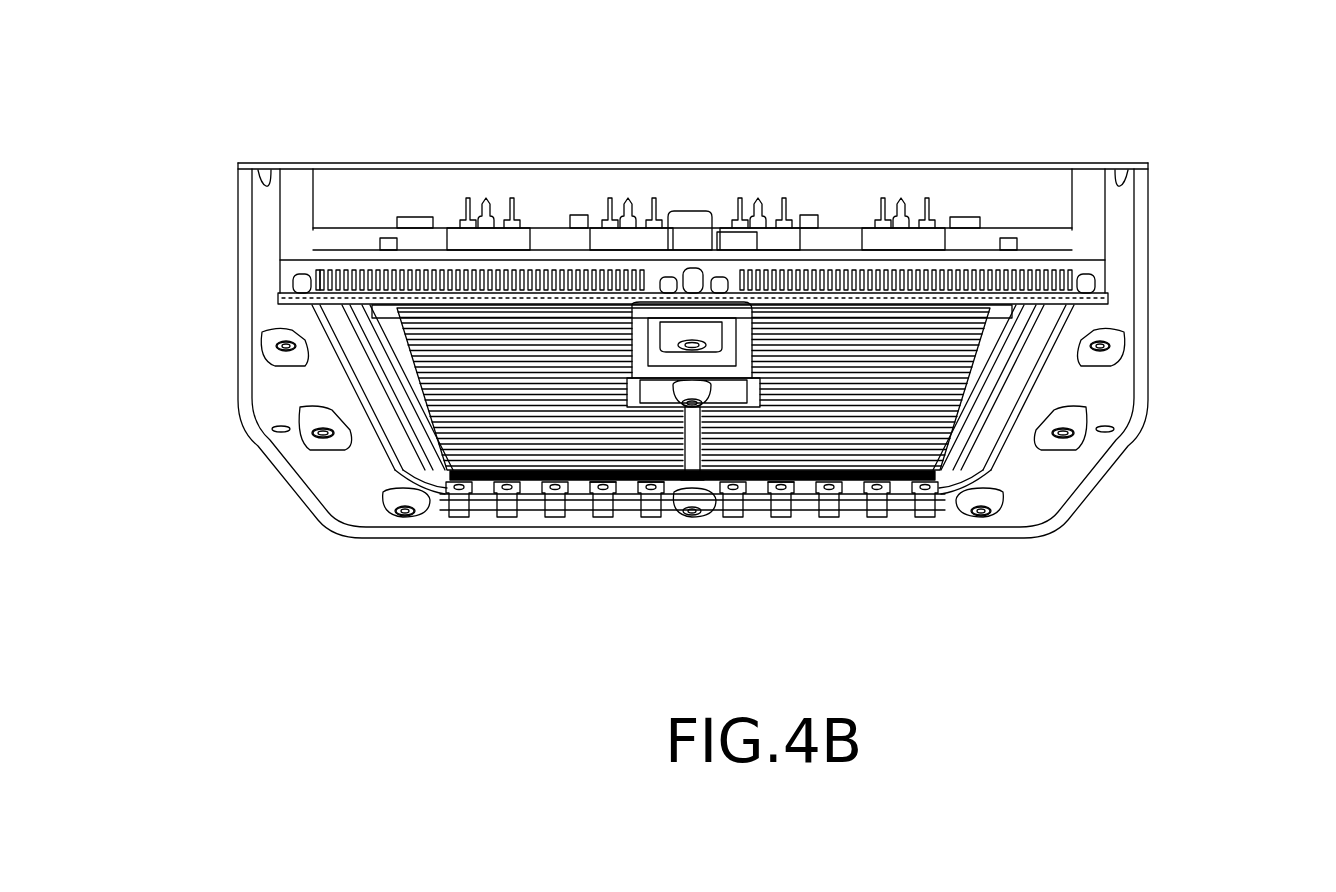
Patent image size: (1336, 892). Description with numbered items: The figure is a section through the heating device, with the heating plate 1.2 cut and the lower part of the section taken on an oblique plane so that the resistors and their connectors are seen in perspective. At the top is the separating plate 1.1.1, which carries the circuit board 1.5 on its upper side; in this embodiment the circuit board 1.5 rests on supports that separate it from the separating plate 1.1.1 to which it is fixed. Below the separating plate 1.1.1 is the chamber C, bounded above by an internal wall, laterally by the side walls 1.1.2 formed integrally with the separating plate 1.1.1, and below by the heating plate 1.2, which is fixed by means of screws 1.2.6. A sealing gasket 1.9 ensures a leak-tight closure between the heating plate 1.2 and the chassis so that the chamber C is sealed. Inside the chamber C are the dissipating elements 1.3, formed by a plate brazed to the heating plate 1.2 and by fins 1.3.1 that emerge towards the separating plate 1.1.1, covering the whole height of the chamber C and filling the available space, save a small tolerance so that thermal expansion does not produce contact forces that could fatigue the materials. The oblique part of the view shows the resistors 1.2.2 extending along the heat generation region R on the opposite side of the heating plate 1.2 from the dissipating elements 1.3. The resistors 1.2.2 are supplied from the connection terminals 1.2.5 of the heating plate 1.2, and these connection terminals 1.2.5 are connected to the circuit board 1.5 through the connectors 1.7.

The separating plate 1.1.1 is at (972, 262).
The side walls 1.1.2 is at (657, 277).
The heating plate 1.2 is at (310, 380).
The resistors 1.2.2 is at (395, 500).
The connection terminals 1.2.5 is at (1023, 590).
The screws 1.2.6 is at (322, 435).
The dissipating elements 1.3 is at (452, 266).
The fins 1.3.1 is at (368, 273).
The circuit board 1.5 is at (555, 230).
The connectors 1.7 is at (597, 518).
The sealing gasket 1.9 is at (300, 283).
The chamber C is at (572, 270).
The heat generation region R is at (335, 462).